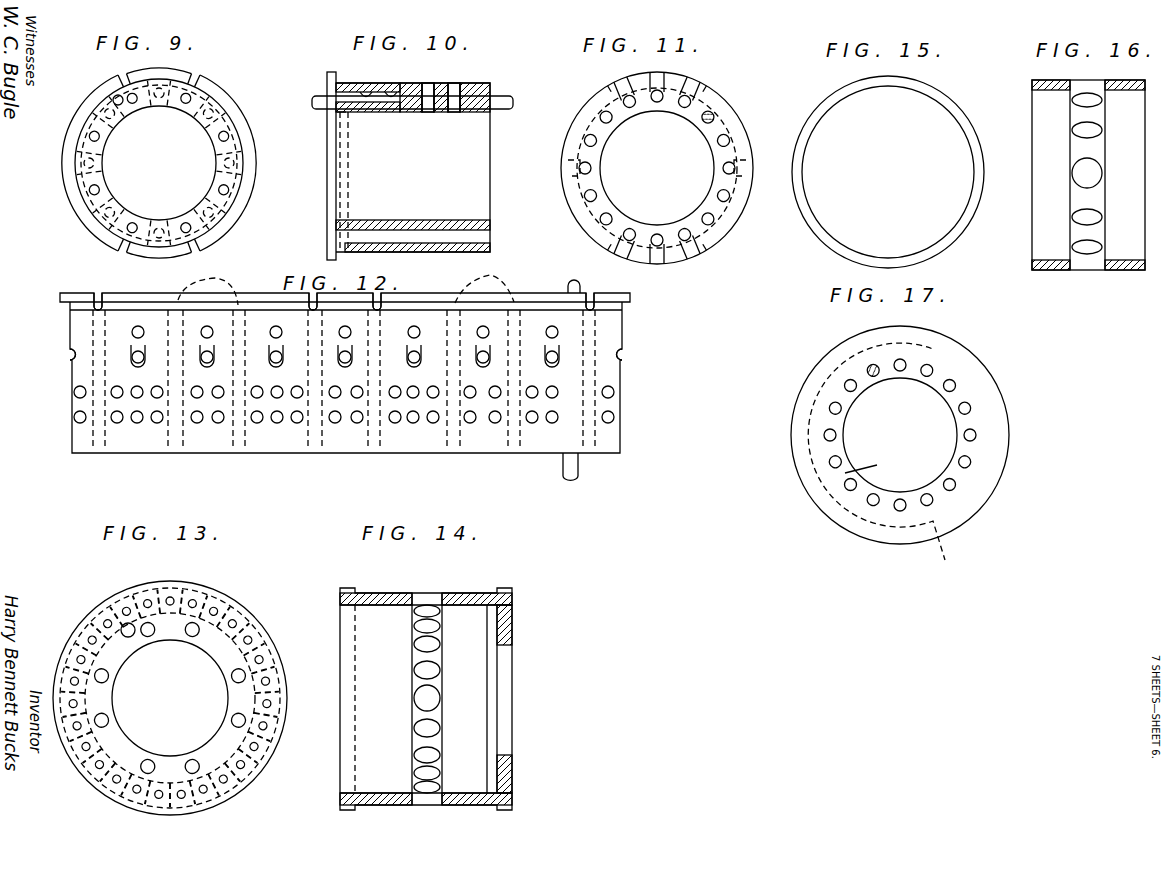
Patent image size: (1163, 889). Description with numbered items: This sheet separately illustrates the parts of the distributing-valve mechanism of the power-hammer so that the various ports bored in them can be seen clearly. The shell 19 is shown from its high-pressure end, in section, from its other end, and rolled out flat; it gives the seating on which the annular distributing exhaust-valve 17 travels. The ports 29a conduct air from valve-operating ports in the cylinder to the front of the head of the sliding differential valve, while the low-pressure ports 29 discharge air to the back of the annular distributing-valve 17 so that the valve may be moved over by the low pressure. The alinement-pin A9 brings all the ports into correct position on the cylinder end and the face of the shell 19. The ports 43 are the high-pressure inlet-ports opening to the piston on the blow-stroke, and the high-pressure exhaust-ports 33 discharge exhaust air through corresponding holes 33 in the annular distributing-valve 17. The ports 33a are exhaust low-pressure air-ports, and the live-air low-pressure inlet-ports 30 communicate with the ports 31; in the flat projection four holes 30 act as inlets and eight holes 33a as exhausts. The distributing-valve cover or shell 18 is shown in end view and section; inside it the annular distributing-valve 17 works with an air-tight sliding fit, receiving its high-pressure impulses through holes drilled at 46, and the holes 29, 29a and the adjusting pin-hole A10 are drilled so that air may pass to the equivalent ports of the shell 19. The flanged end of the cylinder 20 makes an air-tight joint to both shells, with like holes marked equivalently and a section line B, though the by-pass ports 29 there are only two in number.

In FIG. 15, the annular distributing-valve 17 is at (975, 160).
In FIG. 16, the annular distributing-valve 17 is at (1050, 148).
In FIG. 13, the distributing-valve cover or shell 18 is at (178, 633).
In FIG. 14, the distributing-valve cover or shell 18 is at (426, 699).
In FIG. 9, the shell 19 is at (247, 190).
In FIG. 10, the shell 19 is at (470, 175).
In FIG. 11, the shell 19 is at (600, 172).
In FIG. 17, the disk body 20 is at (985, 375).
In FIG. 9, the low-pressure ports 29 is at (127, 77).
In FIG. 10, the low-pressure ports 29 is at (432, 229).
In FIG. 11, the low-pressure ports 29 is at (626, 78).
In FIG. 12, the low-pressure ports 29 is at (105, 287).
In FIG. 13, the low-pressure ports 29 is at (194, 622).
In FIG. 17, the low-pressure ports 29 is at (930, 368).
In FIG. 9, the ports 29a is at (98, 185).
In FIG. 11, the ports 29a is at (721, 192).
In FIG. 12, the ports 29a is at (346, 283).
In FIG. 13, the ports 29a is at (246, 720).
In FIG. 17, the ports 29a is at (972, 410).
In FIG. 10, the live-air low-pressure inlet-ports 30 is at (372, 102).
In FIG. 12, the live-air low-pressure inlet-ports 30 is at (132, 332).
In FIG. 10, the ports 31 is at (342, 117).
In FIG. 11, the ports 31 is at (609, 118).
In FIG. 12, the ports 31 is at (139, 306).
In FIG. 17, the ports 31 is at (906, 362).
In FIG. 10, the high-pressure exhaust-ports 33 is at (430, 92).
In FIG. 16, the high-pressure exhaust-ports 33 is at (1088, 173).
In FIG. 12, the high-pressure exhaust-ports 33 is at (74, 392).
In FIG. 14, the high-pressure exhaust-ports 33 is at (428, 702).
In FIG. 10, the exhaust low-pressure air-ports 33a is at (392, 108).
In FIG. 12, the exhaust low-pressure air-ports 33a is at (62, 359).
In FIG. 10, the high-pressure inlet-ports 43 is at (460, 110).
In FIG. 12, the high-pressure inlet-ports 43 is at (74, 417).
In FIG. 13, the holes 46 is at (95, 650).
In FIG. 14, the holes 46 is at (512, 607).
In FIG. 9, the alinement-pin A9 is at (113, 98).
In FIG. 10, the alinement-pin A9 is at (316, 98).
In FIG. 11, the alinement-pin A9 is at (697, 108).
In FIG. 12, the alinement-pin A9 is at (571, 290).
In FIG. 17, the alinement-pin A9 is at (880, 364).
In FIG. 13, the adjusting pin-hole A10 is at (123, 622).
In FIG. 17, the section line B is at (879, 464).